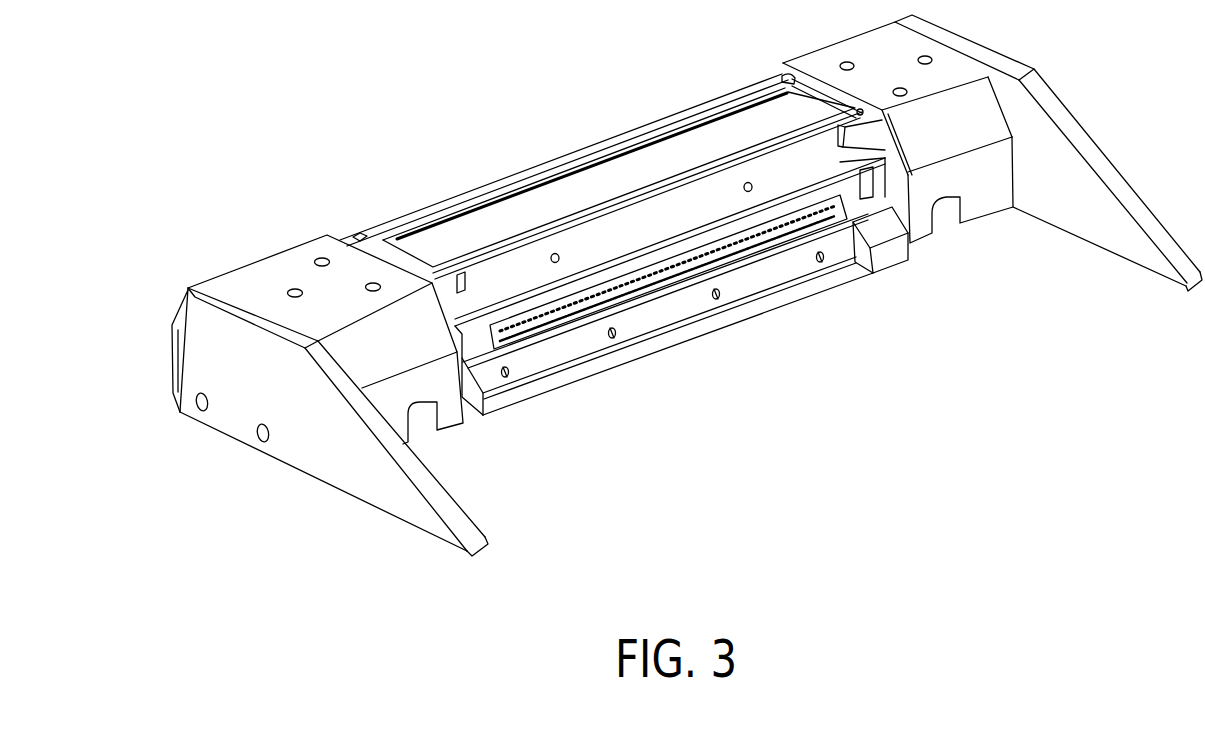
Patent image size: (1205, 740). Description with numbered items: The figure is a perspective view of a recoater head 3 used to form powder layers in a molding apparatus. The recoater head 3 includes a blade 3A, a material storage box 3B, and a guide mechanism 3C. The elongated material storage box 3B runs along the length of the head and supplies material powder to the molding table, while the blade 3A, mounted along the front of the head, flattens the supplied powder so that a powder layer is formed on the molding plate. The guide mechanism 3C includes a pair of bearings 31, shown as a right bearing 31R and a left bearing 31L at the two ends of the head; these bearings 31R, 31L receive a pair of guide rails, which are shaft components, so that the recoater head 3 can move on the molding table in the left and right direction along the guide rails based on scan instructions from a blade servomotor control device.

The recoater head 3 is at (543, 122).
The blade 3A is at (698, 333).
The material storage box 3B is at (678, 150).
The guide mechanism 3C is at (983, 160).
The bearings 31 is at (687, 312).
The left bearing 31L is at (457, 418).
The right bearing 31R is at (980, 208).